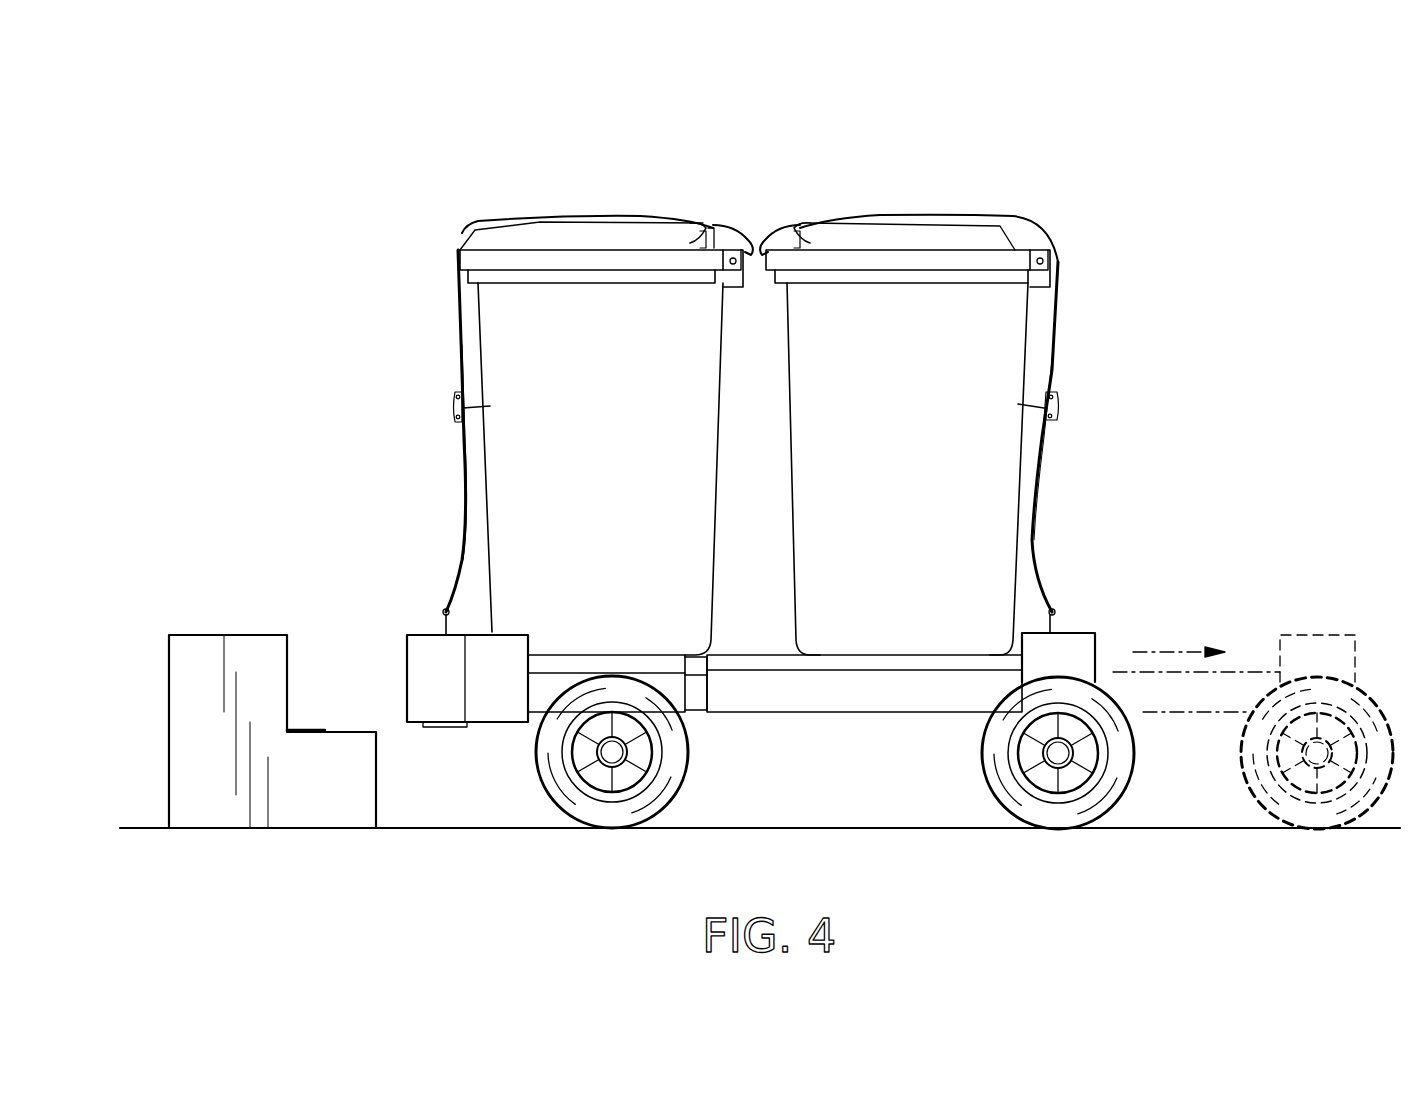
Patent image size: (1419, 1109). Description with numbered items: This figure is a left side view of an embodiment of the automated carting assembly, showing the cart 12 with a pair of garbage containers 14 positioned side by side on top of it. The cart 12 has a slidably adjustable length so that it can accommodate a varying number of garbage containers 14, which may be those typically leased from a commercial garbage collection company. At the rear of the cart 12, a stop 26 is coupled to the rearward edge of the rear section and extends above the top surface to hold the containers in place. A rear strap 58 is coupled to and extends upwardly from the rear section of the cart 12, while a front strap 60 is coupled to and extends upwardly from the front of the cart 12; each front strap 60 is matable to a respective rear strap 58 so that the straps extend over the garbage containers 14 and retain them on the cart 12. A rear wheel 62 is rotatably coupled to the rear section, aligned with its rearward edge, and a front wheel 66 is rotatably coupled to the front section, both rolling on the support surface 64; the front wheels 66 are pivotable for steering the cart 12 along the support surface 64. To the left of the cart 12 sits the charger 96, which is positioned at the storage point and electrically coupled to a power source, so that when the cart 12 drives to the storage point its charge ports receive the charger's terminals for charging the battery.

The cart 12 is at (1112, 633).
The garbage containers 14 is at (872, 240).
The stop 26 is at (1071, 633).
The rear straps 58 is at (1028, 218).
The front straps 60 is at (590, 216).
The rear wheels 62 is at (1082, 817).
The support surface 64 is at (1193, 828).
The front wheels 66 is at (610, 817).
The charger 96 is at (216, 635).